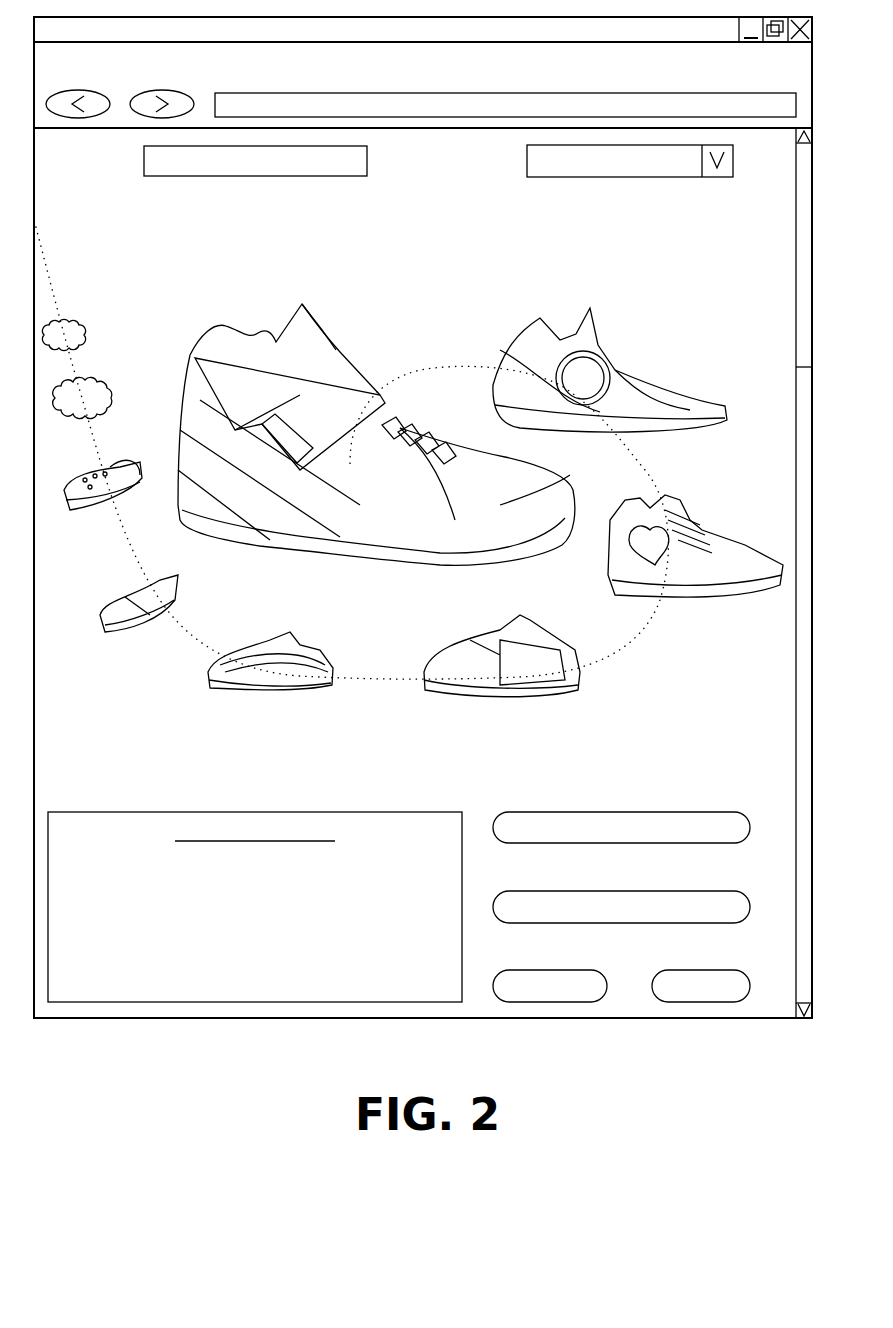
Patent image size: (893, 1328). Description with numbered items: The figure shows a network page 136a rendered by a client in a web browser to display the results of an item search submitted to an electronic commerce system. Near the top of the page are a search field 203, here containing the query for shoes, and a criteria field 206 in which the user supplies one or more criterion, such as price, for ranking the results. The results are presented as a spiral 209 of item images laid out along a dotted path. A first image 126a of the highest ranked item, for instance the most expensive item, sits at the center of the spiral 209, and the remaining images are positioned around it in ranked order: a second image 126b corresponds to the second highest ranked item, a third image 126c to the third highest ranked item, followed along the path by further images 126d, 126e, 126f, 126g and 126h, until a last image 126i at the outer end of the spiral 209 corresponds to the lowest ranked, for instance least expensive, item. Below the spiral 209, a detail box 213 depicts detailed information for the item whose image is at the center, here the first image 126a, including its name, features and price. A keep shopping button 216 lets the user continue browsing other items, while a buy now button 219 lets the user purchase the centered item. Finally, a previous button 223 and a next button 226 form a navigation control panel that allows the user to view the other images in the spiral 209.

The network page 136a is at (470, 1018).
The search field 203 is at (367, 160).
The criteria field 206 is at (733, 160).
The spiral 209 is at (657, 705).
The first image 126a is at (383, 355).
The second image 126b is at (637, 350).
The third image 126c is at (700, 525).
The image 126d is at (495, 710).
The image 126e is at (272, 700).
The image 126f is at (145, 637).
The image 126g is at (125, 508).
The image 126h is at (88, 372).
The last image 126i is at (66, 320).
The detail box 213 is at (192, 812).
The keep shopping button 216 is at (718, 812).
The buy now button 219 is at (718, 891).
The previous button 223 is at (575, 970).
The next button 226 is at (718, 970).